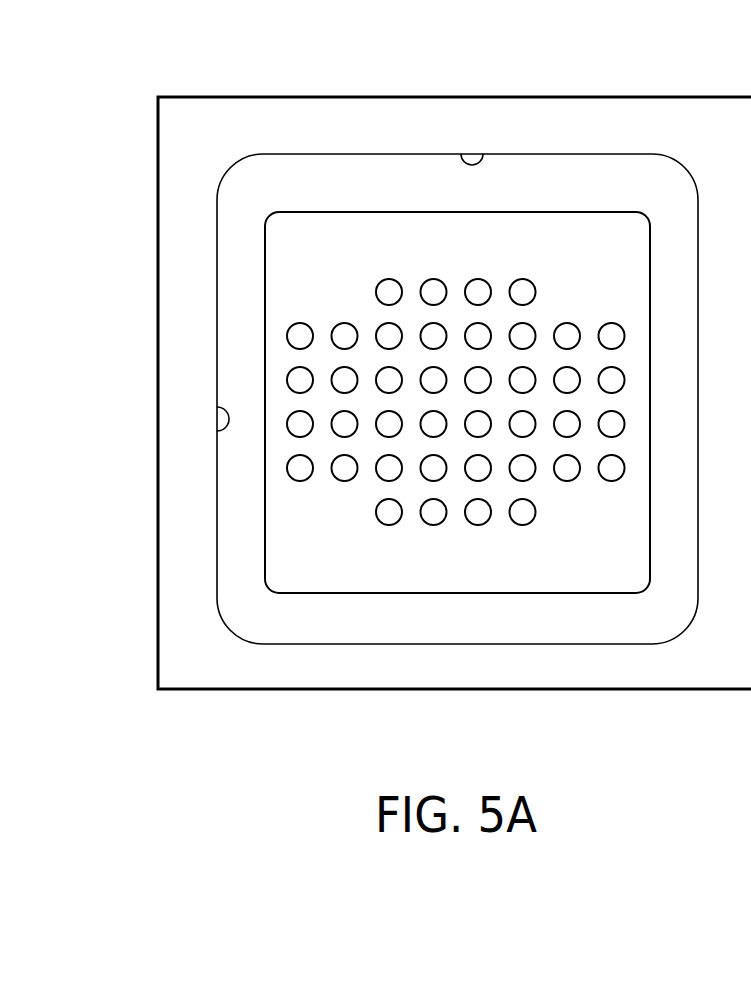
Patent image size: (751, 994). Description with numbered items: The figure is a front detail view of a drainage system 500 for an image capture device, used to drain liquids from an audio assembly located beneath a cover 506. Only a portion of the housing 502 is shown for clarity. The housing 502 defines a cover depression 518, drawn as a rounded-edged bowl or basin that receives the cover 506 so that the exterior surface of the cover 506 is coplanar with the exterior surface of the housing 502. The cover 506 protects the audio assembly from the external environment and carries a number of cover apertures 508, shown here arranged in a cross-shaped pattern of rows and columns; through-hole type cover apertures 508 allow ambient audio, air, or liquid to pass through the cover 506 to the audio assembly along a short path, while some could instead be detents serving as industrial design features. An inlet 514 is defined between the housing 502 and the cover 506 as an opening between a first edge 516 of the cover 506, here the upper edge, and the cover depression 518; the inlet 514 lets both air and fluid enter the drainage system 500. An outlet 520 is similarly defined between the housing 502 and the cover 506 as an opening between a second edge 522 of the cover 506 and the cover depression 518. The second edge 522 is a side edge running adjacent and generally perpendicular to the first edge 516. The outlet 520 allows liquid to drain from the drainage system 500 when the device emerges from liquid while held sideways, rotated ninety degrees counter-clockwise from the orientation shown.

The drainage system 500 is at (660, 190).
The housing 502 is at (216, 97).
The cover 506 is at (265, 292).
The cover apertures 508 is at (514, 281).
The inlet 514 is at (487, 157).
The first edge 516 is at (375, 212).
The cover depression 518 is at (262, 154).
The outlet 520 is at (217, 431).
The second edge 522 is at (265, 500).